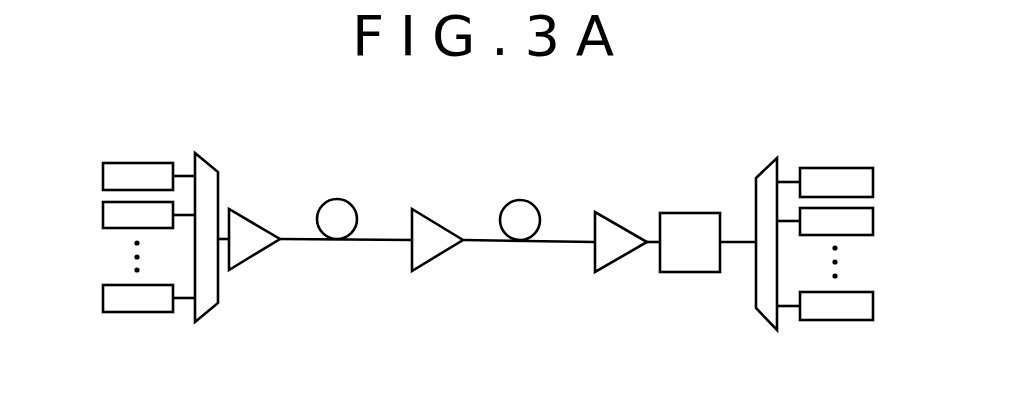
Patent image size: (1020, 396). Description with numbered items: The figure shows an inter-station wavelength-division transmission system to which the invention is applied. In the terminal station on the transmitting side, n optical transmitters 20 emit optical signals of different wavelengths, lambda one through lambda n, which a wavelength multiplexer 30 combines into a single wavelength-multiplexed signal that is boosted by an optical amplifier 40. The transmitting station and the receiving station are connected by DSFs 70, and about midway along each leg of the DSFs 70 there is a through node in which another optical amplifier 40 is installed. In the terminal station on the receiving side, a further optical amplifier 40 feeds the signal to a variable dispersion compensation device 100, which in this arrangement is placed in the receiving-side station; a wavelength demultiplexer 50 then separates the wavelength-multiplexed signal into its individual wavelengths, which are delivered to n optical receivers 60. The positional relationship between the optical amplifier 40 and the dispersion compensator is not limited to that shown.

The optical transmitters 20 is at (128, 163).
The wavelength multiplexer 30 is at (203, 160).
The optical amplifiers 40 is at (241, 215).
The wavelength demultiplexer 50 is at (766, 166).
The optical receivers 60 is at (853, 168).
The DSFs 70 is at (338, 199).
The variable dispersion compensation device 100 is at (690, 213).